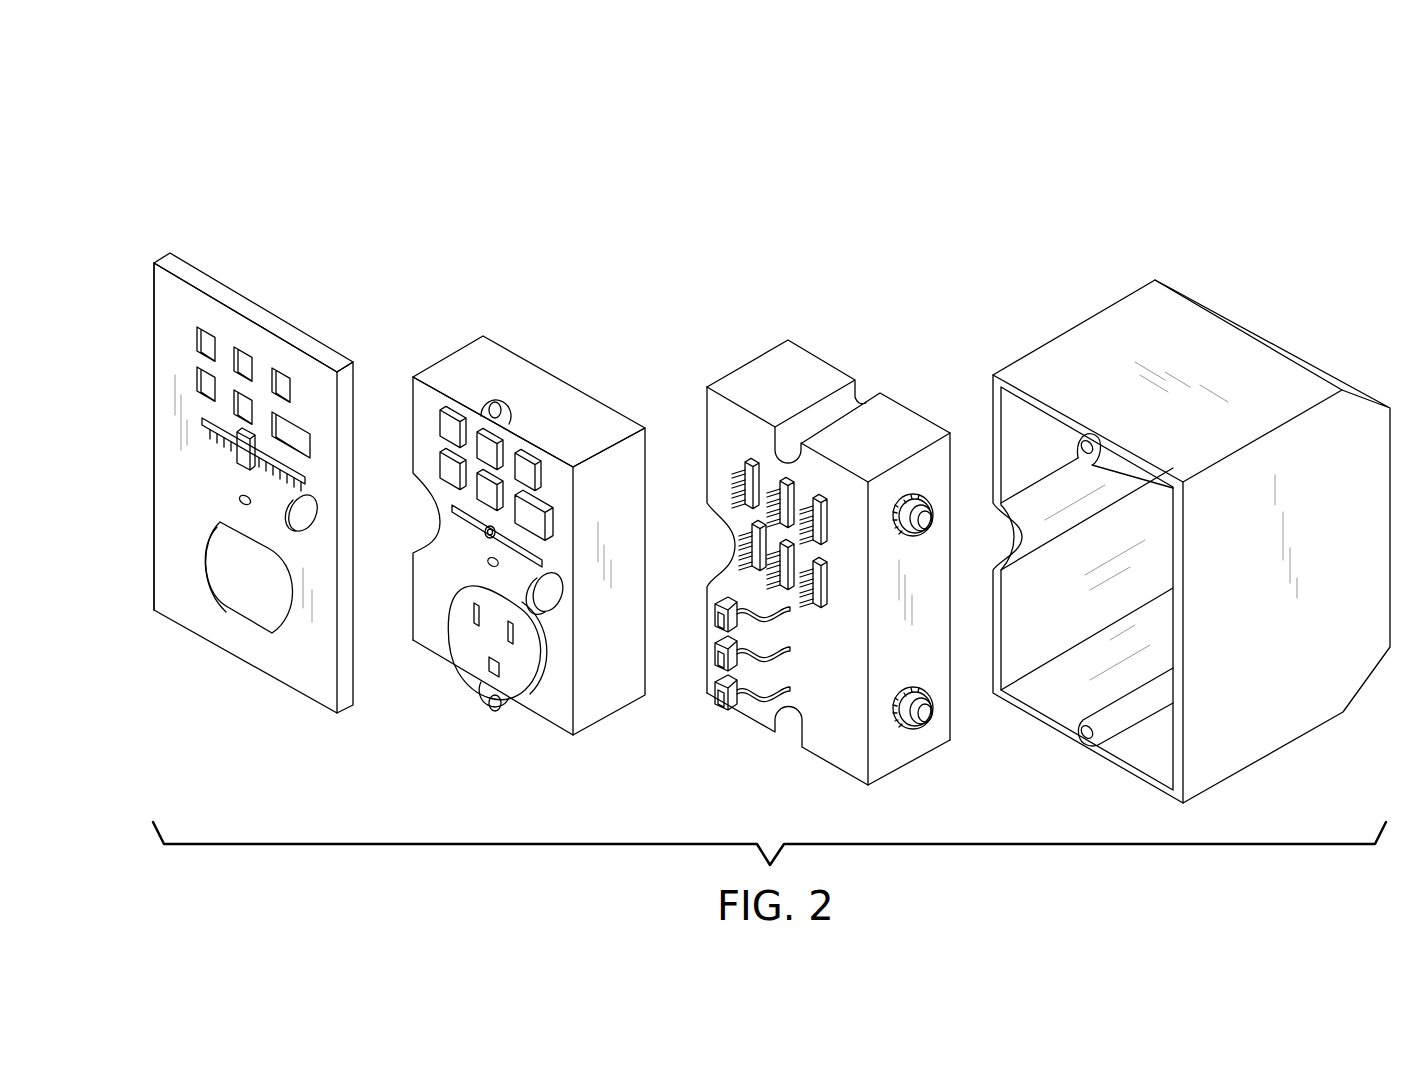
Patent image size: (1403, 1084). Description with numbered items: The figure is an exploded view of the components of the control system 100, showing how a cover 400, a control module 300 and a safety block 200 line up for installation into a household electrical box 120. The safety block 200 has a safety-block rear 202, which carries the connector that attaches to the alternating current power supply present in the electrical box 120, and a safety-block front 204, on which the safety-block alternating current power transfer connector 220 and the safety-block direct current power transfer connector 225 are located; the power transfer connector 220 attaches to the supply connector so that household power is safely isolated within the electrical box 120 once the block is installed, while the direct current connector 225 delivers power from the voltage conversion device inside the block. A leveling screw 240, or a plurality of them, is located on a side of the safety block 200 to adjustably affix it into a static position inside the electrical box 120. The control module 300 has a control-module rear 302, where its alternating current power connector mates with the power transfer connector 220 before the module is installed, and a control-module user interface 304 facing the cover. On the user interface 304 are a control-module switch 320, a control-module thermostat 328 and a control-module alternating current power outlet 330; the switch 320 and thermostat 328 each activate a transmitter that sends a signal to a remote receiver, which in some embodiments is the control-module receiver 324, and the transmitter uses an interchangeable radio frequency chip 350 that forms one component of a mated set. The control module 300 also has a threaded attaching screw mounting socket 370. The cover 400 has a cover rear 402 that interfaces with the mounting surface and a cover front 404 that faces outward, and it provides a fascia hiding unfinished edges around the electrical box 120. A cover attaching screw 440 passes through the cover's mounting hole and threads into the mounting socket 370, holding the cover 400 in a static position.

The control system 100 is at (1163, 145).
The electrical box 120 is at (1125, 297).
The safety block 200 is at (813, 523).
The safety-block rear 202 is at (827, 362).
The safety-block front 204 is at (832, 740).
The safety-block alternating current (AC) power transfer connector 220 is at (707, 568).
The safety-block direct current (DC) power transfer connector 225 is at (728, 715).
The leveling screw 240 is at (918, 493).
The control module 300 is at (475, 502).
The control-module rear 302 is at (533, 365).
The control-module user interface 304 is at (418, 433).
The control-module switch 320 is at (442, 410).
The control-module receiver 324 is at (547, 612).
The control-module thermostat 328 is at (240, 466).
The control-module alternating current (AC) power outlet 330 is at (470, 657).
The radio frequency chip 350 is at (753, 457).
The attaching screw mounting socket 370 is at (483, 578).
The cover 400 is at (221, 480).
The cover rear 402 is at (228, 295).
The cover front 404 is at (170, 318).
The cover attaching screw 440 is at (245, 505).